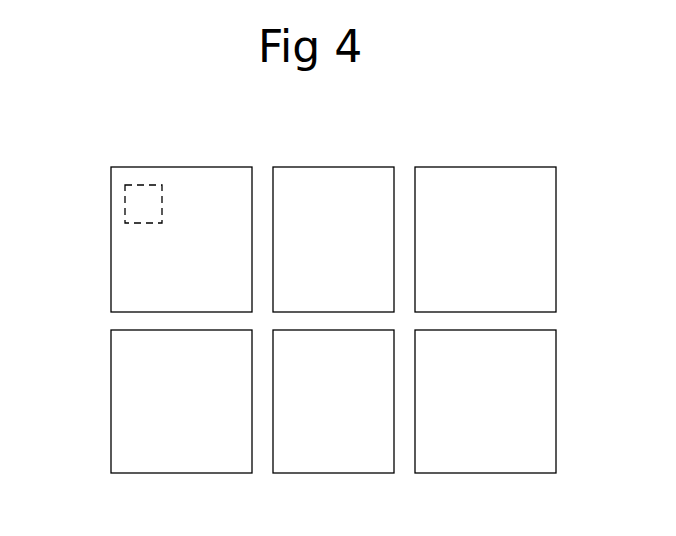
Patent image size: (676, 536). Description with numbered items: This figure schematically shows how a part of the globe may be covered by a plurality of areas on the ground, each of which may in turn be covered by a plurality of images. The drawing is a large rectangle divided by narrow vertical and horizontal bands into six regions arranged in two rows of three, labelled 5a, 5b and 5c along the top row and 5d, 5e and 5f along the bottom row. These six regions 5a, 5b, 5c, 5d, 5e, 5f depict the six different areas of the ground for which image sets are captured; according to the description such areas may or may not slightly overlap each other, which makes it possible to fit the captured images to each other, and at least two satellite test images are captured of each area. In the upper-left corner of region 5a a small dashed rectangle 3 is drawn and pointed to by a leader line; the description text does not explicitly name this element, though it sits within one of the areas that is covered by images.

The pixel / sensor element 3 is at (140, 205).
The panel segment 5a is at (196, 266).
The panel segment 5b is at (345, 266).
The panel segment 5c is at (499, 266).
The panel segment 5d is at (189, 417).
The panel segment 5e is at (345, 417).
The panel segment 5f is at (492, 417).